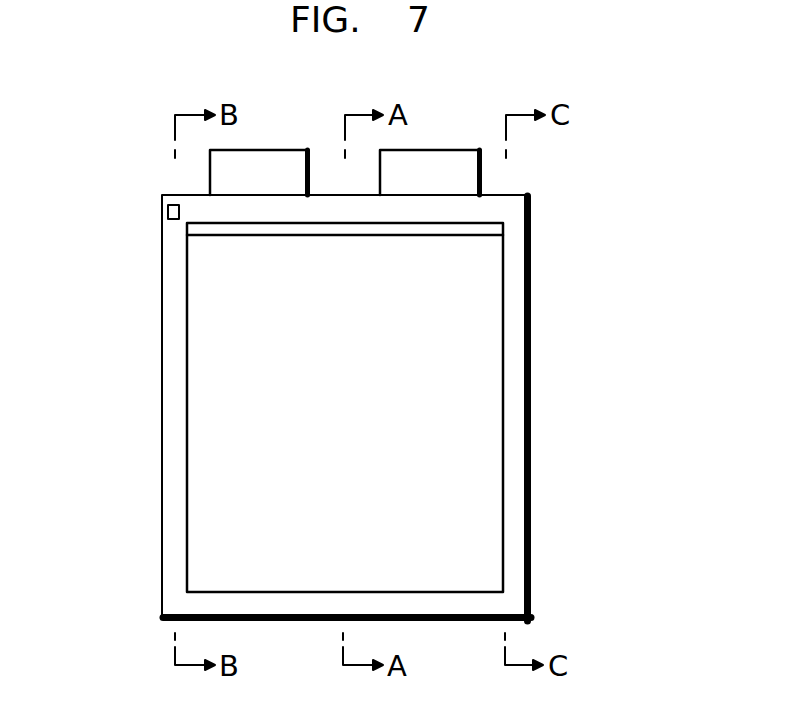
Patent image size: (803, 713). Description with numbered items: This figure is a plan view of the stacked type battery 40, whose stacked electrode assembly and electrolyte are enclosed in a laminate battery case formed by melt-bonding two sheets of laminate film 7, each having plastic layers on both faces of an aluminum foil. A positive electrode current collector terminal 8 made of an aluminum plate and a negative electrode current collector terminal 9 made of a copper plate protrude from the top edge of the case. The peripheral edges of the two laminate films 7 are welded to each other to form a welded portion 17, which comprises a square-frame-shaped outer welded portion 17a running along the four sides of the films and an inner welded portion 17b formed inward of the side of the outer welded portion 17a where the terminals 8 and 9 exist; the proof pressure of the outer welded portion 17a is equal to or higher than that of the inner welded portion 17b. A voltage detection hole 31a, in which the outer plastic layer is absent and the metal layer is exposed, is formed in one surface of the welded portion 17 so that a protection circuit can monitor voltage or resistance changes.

The stacked type battery 40 is at (595, 195).
The laminate film 7 is at (217, 461).
The positive electrode current collector terminal 8 is at (432, 162).
The negative electrode current collector terminal 9 is at (265, 163).
The voltage detection hole 31a is at (168, 212).
The welded portion 17 is at (627, 252).
The outer welded portion 17a is at (512, 367).
The inner welded portion 17b is at (438, 230).